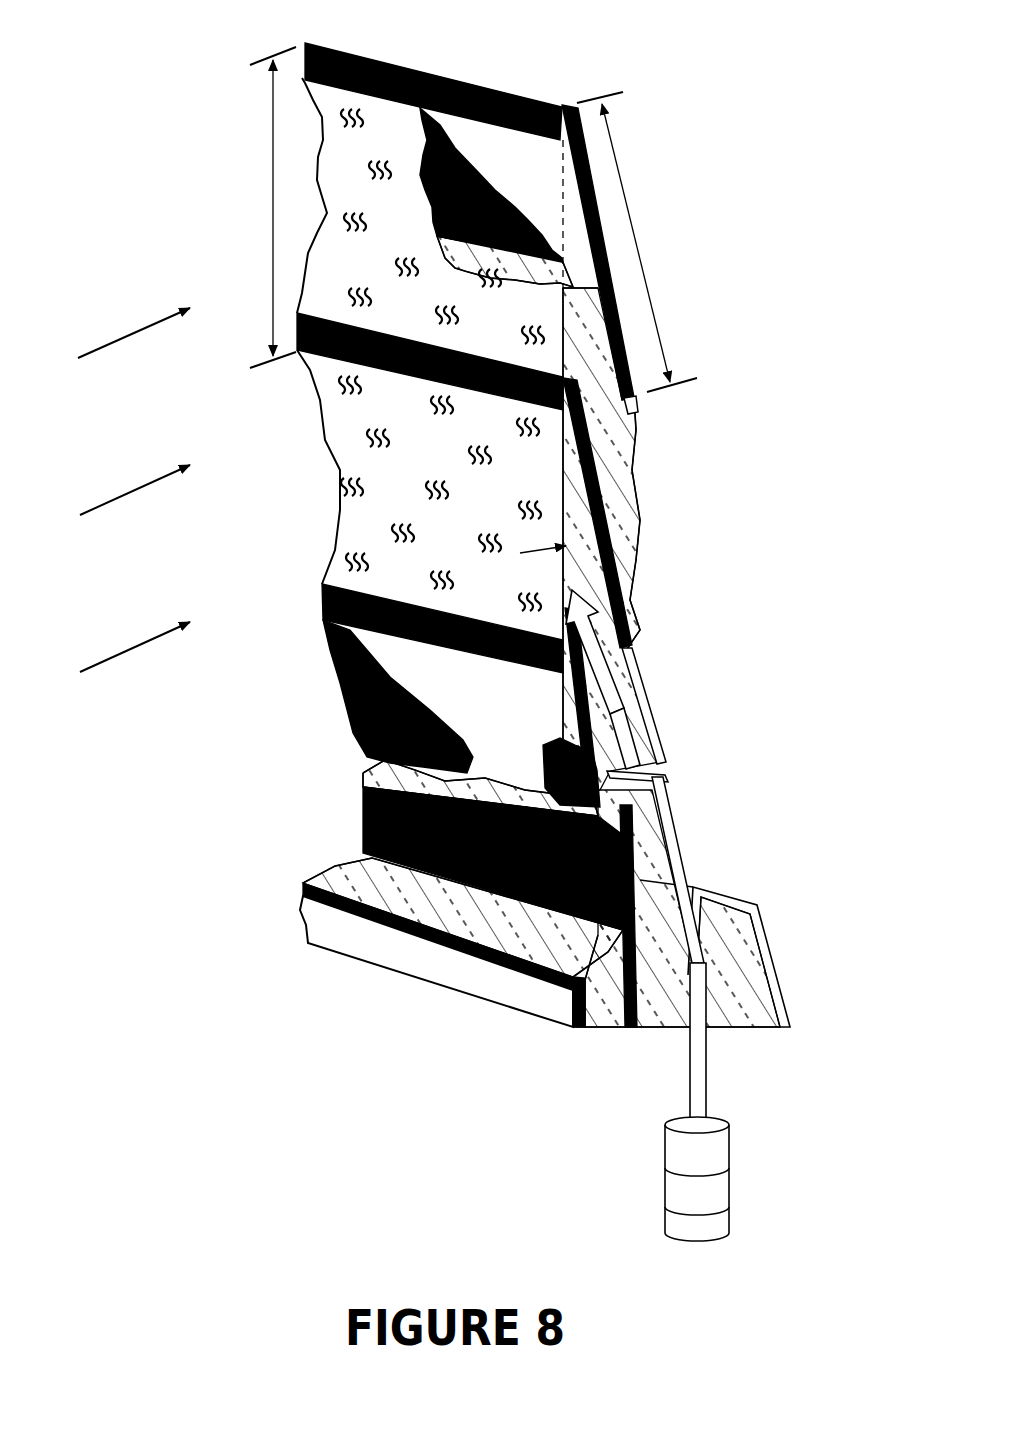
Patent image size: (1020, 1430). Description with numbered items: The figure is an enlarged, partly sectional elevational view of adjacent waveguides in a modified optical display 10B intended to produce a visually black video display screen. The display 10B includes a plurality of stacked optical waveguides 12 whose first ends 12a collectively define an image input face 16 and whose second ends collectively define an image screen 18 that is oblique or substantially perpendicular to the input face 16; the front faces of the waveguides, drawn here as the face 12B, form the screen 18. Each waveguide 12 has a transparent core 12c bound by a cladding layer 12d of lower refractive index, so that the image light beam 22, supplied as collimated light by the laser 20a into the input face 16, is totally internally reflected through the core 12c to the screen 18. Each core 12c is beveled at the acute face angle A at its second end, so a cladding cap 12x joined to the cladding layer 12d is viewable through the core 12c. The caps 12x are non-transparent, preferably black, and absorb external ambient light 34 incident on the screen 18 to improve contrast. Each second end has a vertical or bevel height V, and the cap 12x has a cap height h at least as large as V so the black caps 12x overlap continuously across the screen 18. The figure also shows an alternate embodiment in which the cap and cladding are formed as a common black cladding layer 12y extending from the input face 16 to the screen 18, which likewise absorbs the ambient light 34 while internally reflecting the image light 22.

The optical display 10B is at (507, 625).
The optical waveguides 12 is at (675, 720).
The front face of panel 12B is at (330, 155).
The first end 12a is at (672, 1028).
The transparent core 12c is at (607, 627).
The cladding layer 12d is at (630, 417).
The cladding cap 12x is at (594, 223).
The common cladding layer 12y is at (363, 800).
The image input face 16 is at (765, 1055).
The image screen 18 is at (290, 490).
The laser 20a is at (665, 1172).
The image light beam 22 is at (690, 1098).
The external ambient light 34 is at (150, 327).
The acute face angle A is at (606, 534).
The vertical height V is at (273, 250).
The cap height h is at (652, 312).